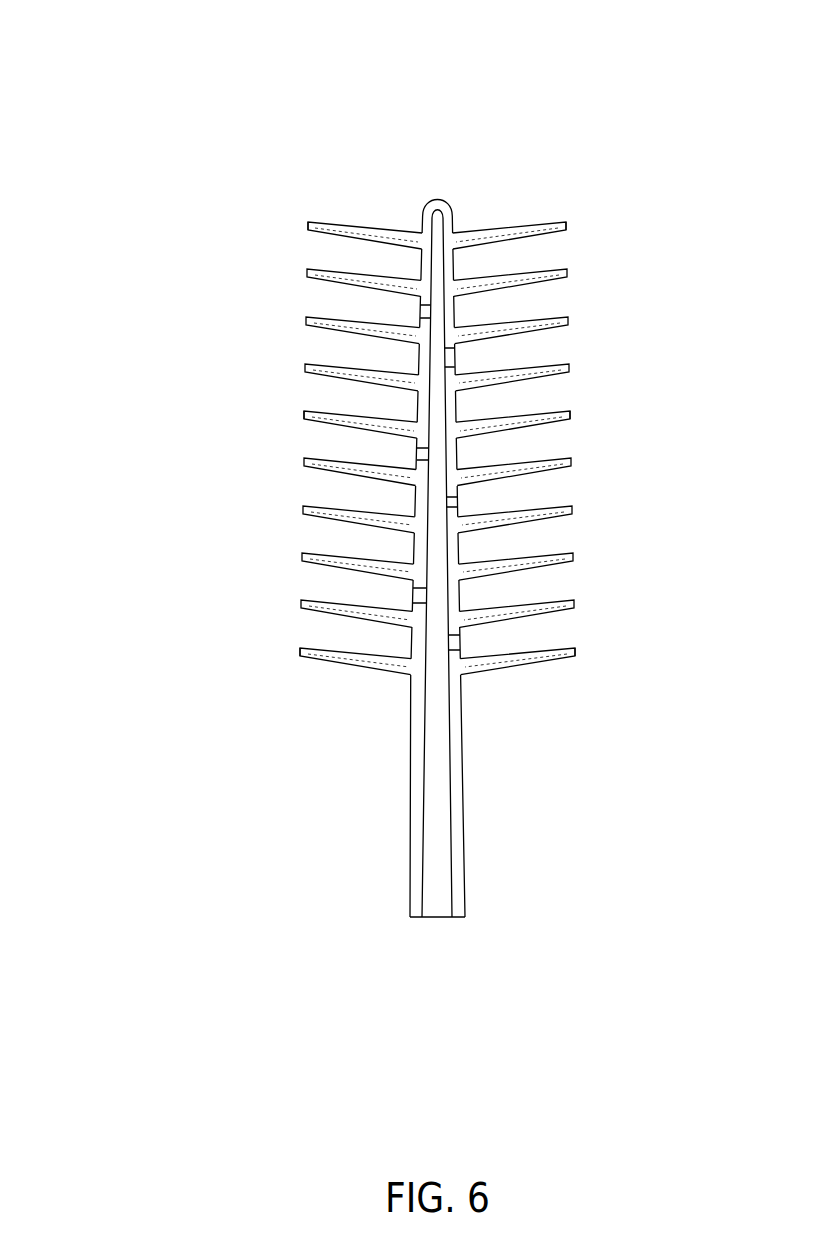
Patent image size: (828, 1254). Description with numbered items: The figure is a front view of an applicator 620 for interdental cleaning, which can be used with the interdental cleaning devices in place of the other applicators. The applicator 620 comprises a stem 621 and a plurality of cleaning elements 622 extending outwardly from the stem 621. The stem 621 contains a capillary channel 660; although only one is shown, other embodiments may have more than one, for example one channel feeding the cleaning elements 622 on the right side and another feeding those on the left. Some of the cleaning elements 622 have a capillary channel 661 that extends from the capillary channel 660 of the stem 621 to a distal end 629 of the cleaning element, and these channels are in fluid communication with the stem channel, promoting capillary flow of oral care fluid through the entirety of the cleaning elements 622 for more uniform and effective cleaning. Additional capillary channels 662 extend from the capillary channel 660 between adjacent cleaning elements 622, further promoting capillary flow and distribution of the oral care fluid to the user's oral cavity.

The applicator 620 is at (97, 92).
The stem 621 is at (460, 768).
The capillary channel 660 is at (440, 723).
The cleaning elements 622 is at (567, 317).
The capillary channel 661 is at (413, 238).
The additional capillary channels 662 is at (423, 313).
The distal end 629 is at (571, 412).